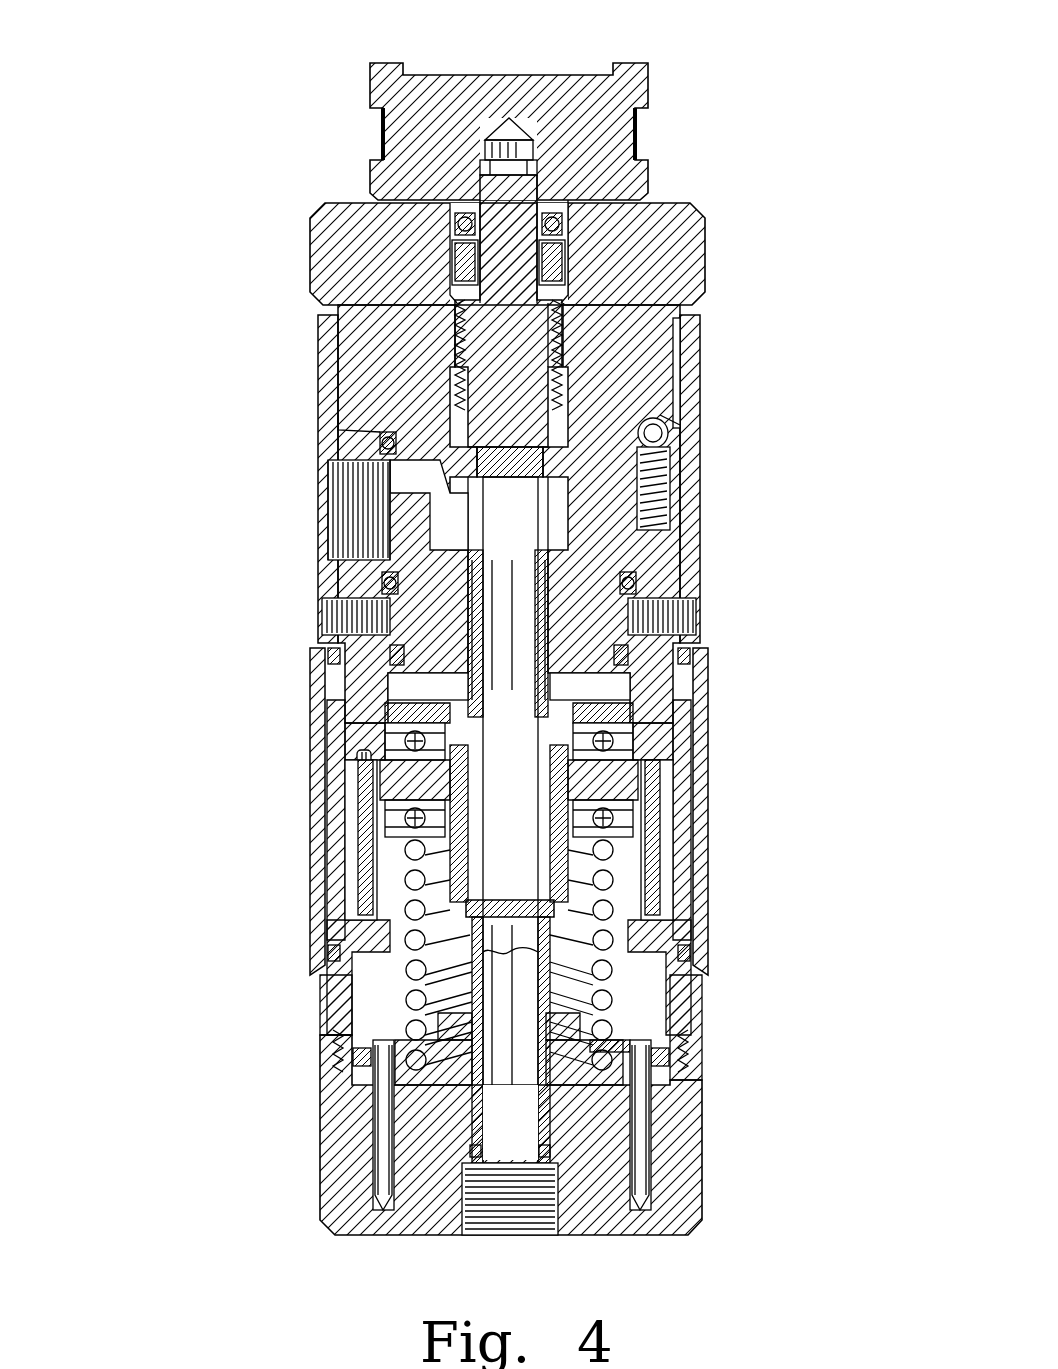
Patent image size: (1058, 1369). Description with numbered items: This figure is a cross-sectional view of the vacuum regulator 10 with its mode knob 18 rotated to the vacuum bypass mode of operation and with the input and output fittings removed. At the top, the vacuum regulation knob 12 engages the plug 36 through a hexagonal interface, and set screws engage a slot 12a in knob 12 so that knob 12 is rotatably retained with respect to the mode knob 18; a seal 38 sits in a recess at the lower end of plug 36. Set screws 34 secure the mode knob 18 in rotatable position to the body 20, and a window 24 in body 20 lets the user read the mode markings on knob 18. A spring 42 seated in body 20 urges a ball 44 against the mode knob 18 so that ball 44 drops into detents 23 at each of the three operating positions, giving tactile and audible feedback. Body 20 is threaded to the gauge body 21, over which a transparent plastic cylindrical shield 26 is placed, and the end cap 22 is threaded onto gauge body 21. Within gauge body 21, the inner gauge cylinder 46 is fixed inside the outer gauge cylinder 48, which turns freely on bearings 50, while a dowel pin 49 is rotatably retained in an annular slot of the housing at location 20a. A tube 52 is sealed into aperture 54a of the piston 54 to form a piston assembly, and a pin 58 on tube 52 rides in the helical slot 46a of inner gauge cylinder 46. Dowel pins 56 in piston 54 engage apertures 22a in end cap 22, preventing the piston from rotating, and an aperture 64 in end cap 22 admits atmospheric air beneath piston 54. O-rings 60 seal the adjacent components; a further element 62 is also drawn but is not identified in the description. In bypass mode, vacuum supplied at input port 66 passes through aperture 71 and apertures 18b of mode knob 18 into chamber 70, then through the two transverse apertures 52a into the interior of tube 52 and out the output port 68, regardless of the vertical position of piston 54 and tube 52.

The vacuum regulator 10 is at (172, 125).
The vacuum regulation knob 12 is at (535, 75).
The slot 12a is at (560, 260).
The mode knob 18 is at (310, 252).
The apertures 18b is at (362, 548).
The body 20 is at (318, 352).
The location 20a is at (345, 745).
The gauge body 21 is at (322, 1020).
The end cap 22 is at (703, 1050).
The apertures 22a is at (380, 1235).
The detents 23 is at (345, 412).
The window 24 is at (700, 348).
The transparent plastic cylindrical shield 26 is at (315, 822).
The set screws 34 is at (328, 612).
The plug 36 is at (560, 188).
The seal 38 is at (505, 480).
The spring 42 is at (680, 470).
The ball 44 is at (670, 440).
The inner gauge cylinder 46 is at (425, 860).
The helical slot 46a is at (582, 890).
The outer gauge cylinder 48 is at (350, 896).
The dowel pin 49 is at (357, 790).
The bearings 50 is at (390, 755).
The tube 52 is at (524, 550).
The transverse apertures 52a is at (415, 713).
The piston 54 is at (395, 1110).
The aperture 54a is at (615, 1050).
The dowel pins 56 is at (373, 1140).
The pin 58 is at (600, 915).
The o-rings 60 is at (555, 196).
The springs 62 is at (412, 985).
The aperture 64 is at (700, 1093).
The input port 66 is at (300, 492).
The output port 68 is at (508, 1242).
The chamber 70 is at (509, 686).
The aperture 71 is at (423, 490).